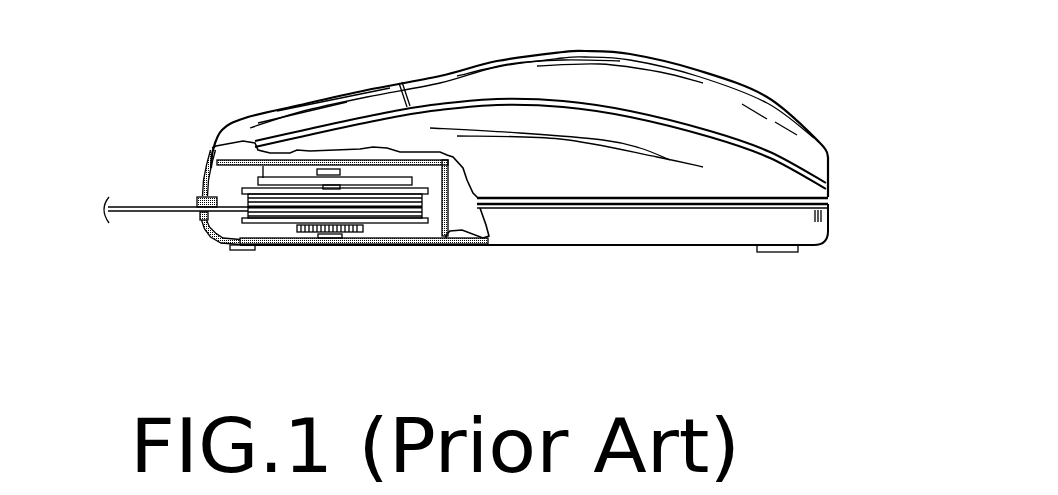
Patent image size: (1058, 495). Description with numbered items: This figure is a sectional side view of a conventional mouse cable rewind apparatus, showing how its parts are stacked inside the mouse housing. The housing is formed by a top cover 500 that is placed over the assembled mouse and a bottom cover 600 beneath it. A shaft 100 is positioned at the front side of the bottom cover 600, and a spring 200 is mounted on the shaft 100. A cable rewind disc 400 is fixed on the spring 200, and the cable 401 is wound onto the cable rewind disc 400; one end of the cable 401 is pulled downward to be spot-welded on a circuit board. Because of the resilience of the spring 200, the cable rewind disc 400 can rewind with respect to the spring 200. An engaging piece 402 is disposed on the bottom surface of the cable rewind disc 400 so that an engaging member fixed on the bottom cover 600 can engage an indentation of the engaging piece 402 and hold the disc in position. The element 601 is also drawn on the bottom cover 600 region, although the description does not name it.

The shaft 100 is at (337, 240).
The spring 200 is at (307, 180).
The cable rewind disc 400 is at (402, 225).
The cable 401 is at (150, 210).
The engaging piece 402 is at (298, 232).
The top cover 500 is at (675, 98).
The bottom cover 600 is at (707, 232).
The base plate 601 is at (600, 218).